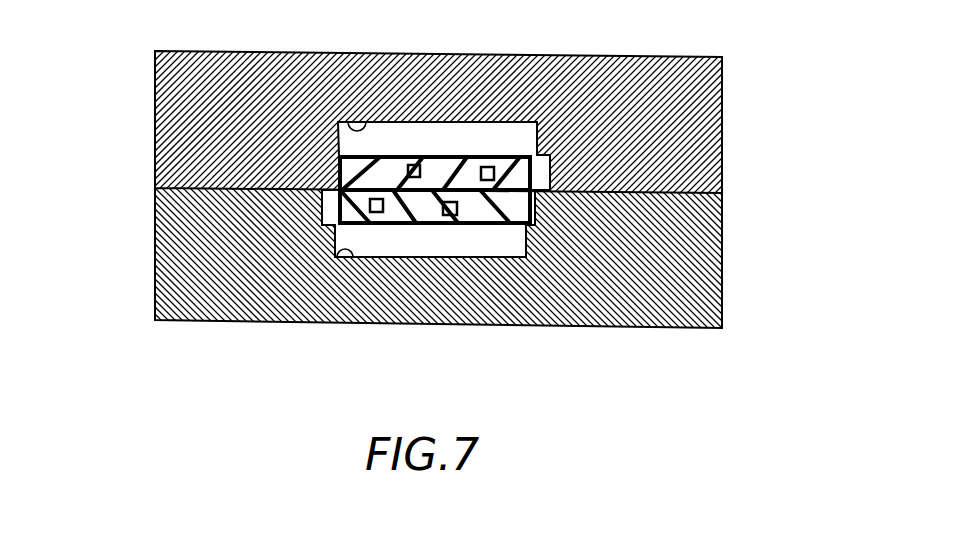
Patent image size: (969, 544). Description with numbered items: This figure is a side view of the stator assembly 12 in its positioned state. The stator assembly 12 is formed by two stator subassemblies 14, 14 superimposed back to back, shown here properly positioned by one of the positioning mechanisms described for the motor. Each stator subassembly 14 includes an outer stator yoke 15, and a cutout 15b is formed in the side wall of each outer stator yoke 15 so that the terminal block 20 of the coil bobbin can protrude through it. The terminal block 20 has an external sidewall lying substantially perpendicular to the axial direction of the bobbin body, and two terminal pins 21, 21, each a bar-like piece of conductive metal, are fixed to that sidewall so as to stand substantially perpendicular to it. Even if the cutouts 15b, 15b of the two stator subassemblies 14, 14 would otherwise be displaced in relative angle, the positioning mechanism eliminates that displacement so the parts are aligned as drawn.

The stator assembly 12 is at (837, 108).
The stator subassembly 14 is at (677, 134).
The outer stator yoke 15 is at (182, 128).
The cutout 15b is at (366, 121).
The terminal block 20 is at (441, 163).
The terminal pin 21 is at (492, 166).